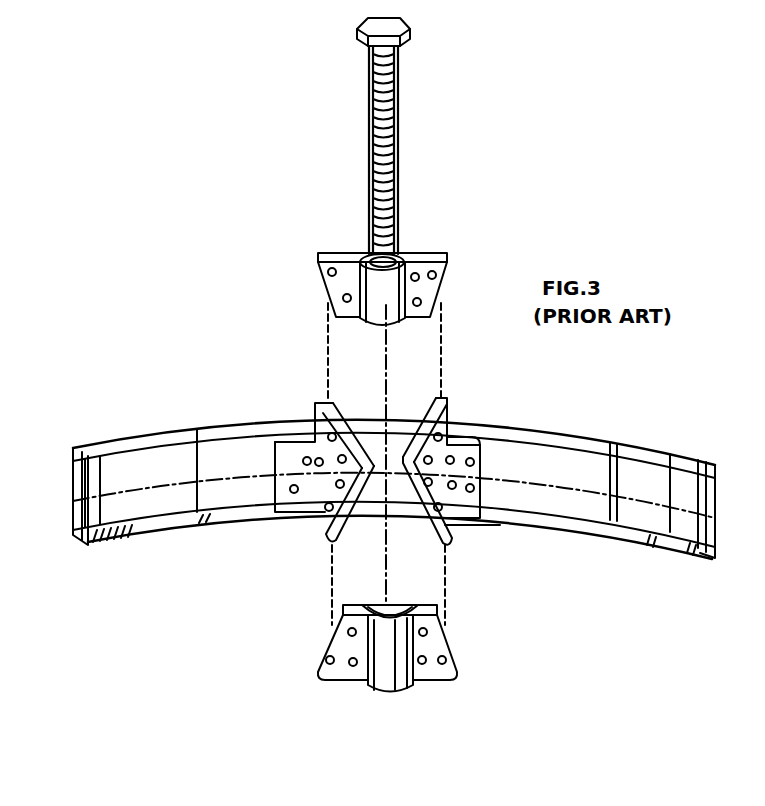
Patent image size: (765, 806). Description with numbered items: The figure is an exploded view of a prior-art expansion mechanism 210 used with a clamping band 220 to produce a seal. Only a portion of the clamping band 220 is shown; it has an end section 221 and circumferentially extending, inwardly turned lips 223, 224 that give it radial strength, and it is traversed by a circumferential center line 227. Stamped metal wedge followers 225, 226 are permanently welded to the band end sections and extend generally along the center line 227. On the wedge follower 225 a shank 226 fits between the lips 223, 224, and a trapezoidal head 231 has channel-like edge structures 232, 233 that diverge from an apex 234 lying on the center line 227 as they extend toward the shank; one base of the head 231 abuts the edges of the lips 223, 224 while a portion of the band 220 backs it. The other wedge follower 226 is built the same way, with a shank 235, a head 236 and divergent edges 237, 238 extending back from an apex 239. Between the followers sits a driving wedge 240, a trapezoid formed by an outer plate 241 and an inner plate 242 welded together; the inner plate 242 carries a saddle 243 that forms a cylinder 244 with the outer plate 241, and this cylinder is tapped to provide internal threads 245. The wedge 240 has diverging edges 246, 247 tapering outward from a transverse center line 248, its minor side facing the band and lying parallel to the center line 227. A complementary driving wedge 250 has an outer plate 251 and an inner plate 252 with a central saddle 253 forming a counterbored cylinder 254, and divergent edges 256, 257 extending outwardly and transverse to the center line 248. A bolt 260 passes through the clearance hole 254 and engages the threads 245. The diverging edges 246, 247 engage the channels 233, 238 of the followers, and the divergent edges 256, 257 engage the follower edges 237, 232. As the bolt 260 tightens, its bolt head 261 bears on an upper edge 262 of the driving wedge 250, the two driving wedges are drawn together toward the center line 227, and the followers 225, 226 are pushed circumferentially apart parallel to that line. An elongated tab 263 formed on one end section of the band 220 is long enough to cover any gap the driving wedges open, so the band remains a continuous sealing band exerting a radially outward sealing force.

The expansion mechanism 210 is at (290, 170).
The clamping band 220 is at (386, 497).
The end section 221 is at (542, 418).
The inwardly turned lip 223 is at (125, 441).
The inwardly turned lip 224 is at (112, 545).
The wedge follower 225 is at (450, 420).
The wedge follower 226 is at (473, 463).
The circumferential center line 227 is at (70, 514).
The trapezoidal head 231 is at (406, 477).
The edge structure 232 is at (423, 422).
The edge structure 233 is at (393, 592).
The apex 234 is at (392, 512).
The shank 235 is at (303, 458).
The head 236 is at (343, 467).
The divergent edge 237 is at (352, 413).
The divergent edge 238 is at (342, 515).
The apex 239 is at (377, 418).
The driving wedge 240 is at (380, 642).
The outer plate 241 is at (352, 607).
The inner plate 242 is at (440, 672).
The saddle 243 is at (397, 686).
The cylinder 244 is at (406, 606).
The internal threads 245 is at (445, 602).
The diverging edge 246 is at (318, 658).
The diverging edge 247 is at (460, 660).
The transverse center line 248 is at (387, 602).
The complementary driving wedge 250 is at (391, 298).
The outer plate 251 is at (440, 263).
The inner plate 252 is at (427, 289).
The central saddle 253 is at (358, 276).
The cylinder 254 is at (376, 256).
The divergent edge 256 is at (321, 286).
The divergent edge 257 is at (432, 305).
The bolt 260 is at (409, 136).
The bolt head 261 is at (394, 32).
The upper edge 262 is at (400, 255).
The elongated tab 263 is at (392, 418).